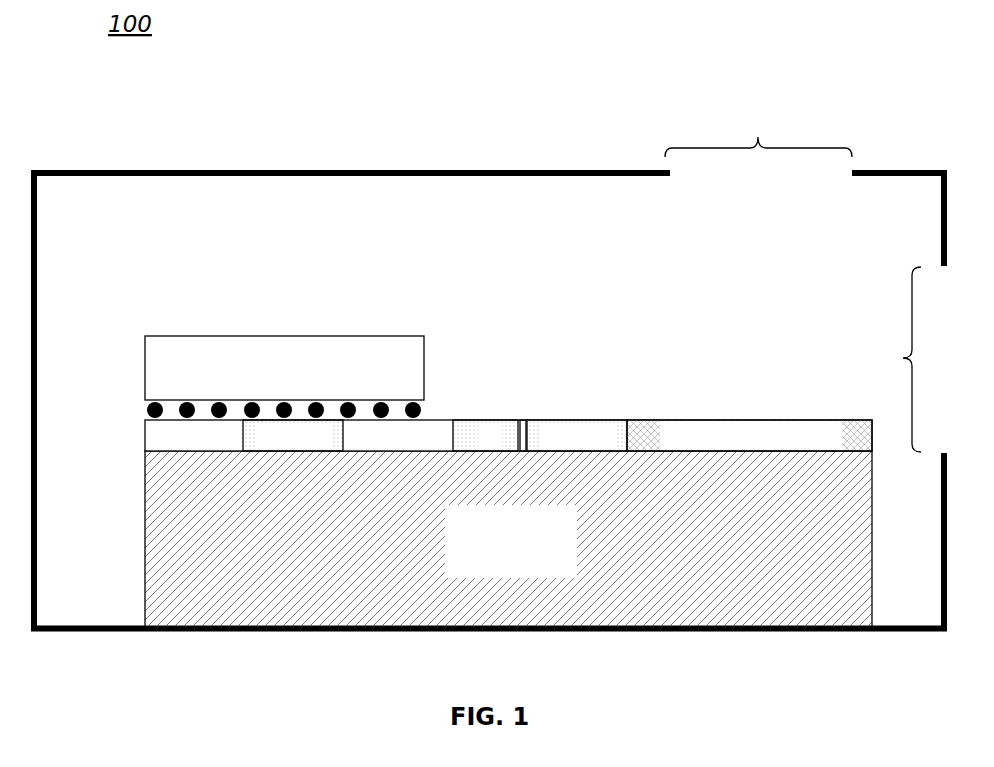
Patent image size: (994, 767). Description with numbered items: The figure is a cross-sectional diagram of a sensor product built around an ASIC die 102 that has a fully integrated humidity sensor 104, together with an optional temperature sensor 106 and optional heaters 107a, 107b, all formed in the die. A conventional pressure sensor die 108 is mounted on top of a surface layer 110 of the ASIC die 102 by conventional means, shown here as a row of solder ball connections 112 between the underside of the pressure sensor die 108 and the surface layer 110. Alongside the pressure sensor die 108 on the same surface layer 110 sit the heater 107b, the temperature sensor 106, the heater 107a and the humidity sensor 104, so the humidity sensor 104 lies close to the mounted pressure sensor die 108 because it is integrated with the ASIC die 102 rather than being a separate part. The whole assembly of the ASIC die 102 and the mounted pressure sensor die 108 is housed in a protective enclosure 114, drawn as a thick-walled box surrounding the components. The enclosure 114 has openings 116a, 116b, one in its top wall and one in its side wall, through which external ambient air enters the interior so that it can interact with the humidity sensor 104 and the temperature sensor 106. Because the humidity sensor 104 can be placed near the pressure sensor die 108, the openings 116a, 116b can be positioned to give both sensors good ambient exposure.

The ASIC die 102 is at (145, 545).
The humidity sensor 104 is at (748, 420).
The temperature sensor 106 is at (500, 420).
The heater 107a is at (603, 420).
The heater 107b is at (243, 435).
The pressure sensor die 108 is at (388, 336).
The surface layer 110 is at (145, 440).
The solder ball connections 112 is at (145, 411).
The protective enclosure 114 is at (219, 170).
The opening 116a is at (758, 126).
The opening 116b is at (880, 359).